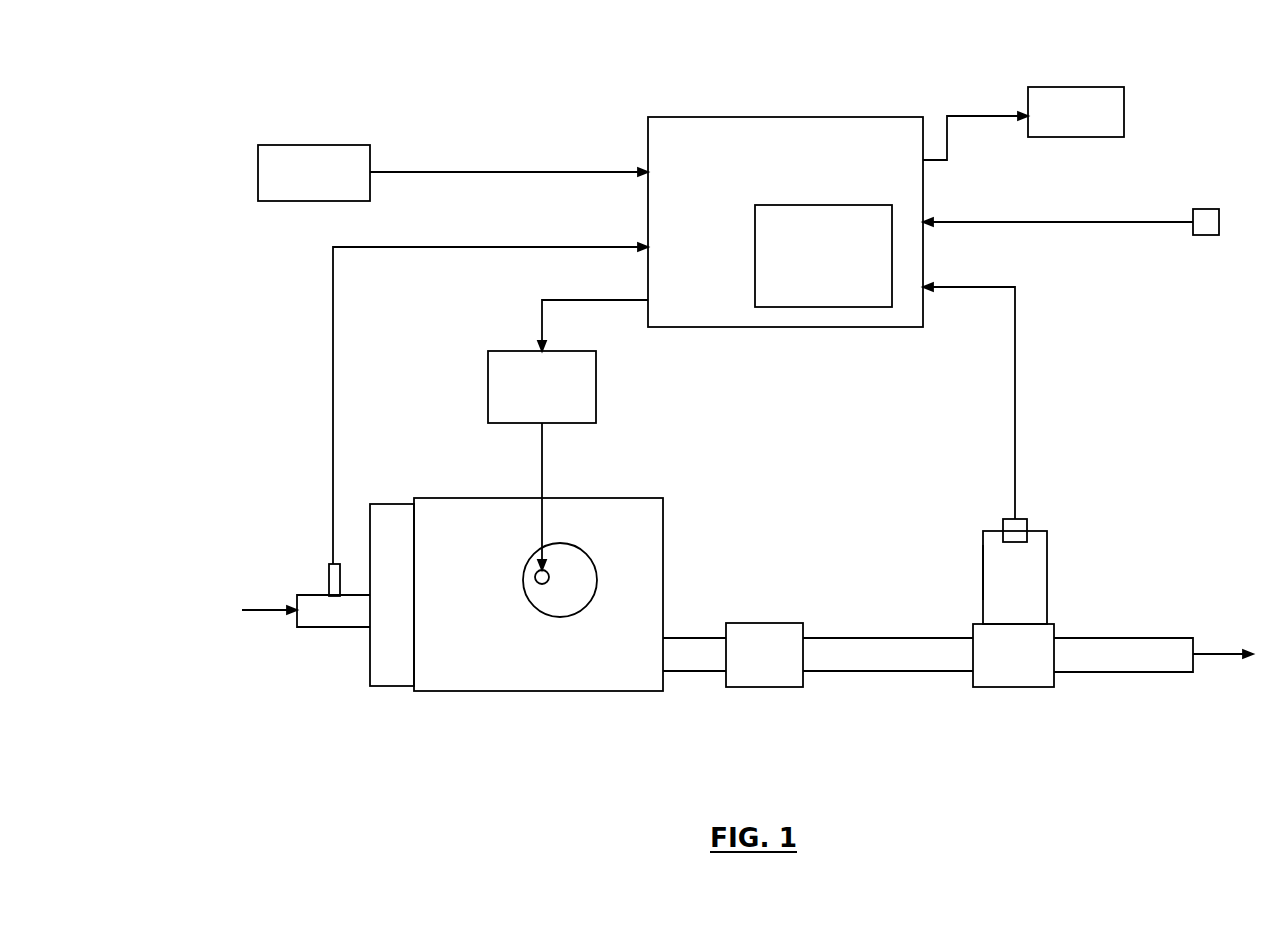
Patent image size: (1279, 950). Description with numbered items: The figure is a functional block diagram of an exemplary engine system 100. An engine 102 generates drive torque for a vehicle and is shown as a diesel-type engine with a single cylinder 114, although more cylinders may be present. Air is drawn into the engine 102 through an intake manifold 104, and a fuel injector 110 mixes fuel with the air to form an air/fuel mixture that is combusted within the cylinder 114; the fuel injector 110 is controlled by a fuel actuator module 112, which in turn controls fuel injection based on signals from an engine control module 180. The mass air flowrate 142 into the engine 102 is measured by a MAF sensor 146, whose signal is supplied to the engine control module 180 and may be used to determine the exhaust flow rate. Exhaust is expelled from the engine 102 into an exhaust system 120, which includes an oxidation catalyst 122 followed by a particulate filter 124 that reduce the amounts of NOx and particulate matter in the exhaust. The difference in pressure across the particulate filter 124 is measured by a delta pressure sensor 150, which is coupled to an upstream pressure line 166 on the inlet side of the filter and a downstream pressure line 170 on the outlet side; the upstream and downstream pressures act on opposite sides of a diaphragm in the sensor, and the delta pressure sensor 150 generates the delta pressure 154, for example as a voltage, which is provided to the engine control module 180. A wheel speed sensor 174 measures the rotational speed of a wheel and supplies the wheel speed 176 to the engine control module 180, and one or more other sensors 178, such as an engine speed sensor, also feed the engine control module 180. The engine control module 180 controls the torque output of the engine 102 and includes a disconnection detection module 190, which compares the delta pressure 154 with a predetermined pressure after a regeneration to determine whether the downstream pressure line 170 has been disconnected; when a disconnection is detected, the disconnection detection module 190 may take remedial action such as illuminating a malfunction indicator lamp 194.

The engine system 100 is at (258, 66).
The engine 102 is at (520, 498).
The intake manifold 104 is at (390, 504).
The fuel injector 110 is at (535, 576).
The fuel actuator module 112 is at (488, 367).
The cylinder 114 is at (562, 617).
The exhaust system 120 is at (1043, 784).
The oxidation catalyst 122 is at (775, 623).
The particulate filter 124 is at (1023, 687).
The mass air flowrate 142 is at (333, 598).
The MAF sensor 146 is at (333, 328).
The delta pressure sensor 150 is at (1008, 519).
The delta pressure 154 is at (1017, 415).
The upstream pressure line 166 is at (983, 555).
The downstream pressure line 170 is at (1047, 555).
The wheel speed sensor 174 is at (1219, 222).
The wheel speed 176 is at (1157, 222).
The other sensors 178 is at (312, 145).
The engine control module 180 is at (778, 117).
The disconnection detection module 190 is at (824, 205).
The malfunction indicator lamp 194 is at (1078, 87).